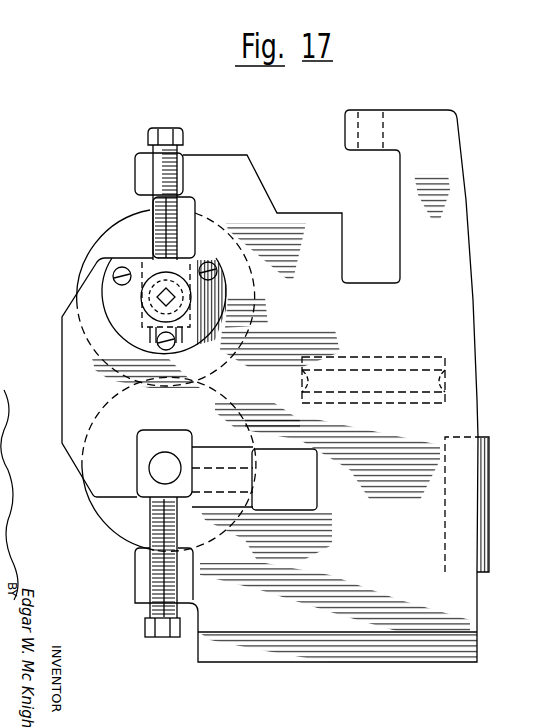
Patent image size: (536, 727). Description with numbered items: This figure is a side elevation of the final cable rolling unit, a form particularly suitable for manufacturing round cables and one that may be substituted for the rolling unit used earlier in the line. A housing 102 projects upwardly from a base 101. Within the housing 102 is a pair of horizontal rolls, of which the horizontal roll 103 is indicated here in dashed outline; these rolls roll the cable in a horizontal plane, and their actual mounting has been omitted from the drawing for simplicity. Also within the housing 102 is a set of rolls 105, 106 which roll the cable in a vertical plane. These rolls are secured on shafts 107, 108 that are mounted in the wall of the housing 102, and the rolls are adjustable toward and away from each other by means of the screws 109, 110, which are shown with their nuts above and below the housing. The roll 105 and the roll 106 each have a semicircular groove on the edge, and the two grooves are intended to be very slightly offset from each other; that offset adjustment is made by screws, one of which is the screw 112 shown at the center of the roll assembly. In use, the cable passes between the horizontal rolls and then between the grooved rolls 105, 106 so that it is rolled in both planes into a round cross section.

The base 101 is at (345, 662).
The housing 102 is at (482, 383).
The horizontal roll 103 is at (388, 357).
The roll 105 is at (98, 529).
The roll 106 is at (100, 245).
The shaft 107 is at (132, 472).
The shaft 108 is at (144, 298).
The screw 109 is at (166, 638).
The screw 110 is at (150, 130).
The screw 112 is at (161, 302).